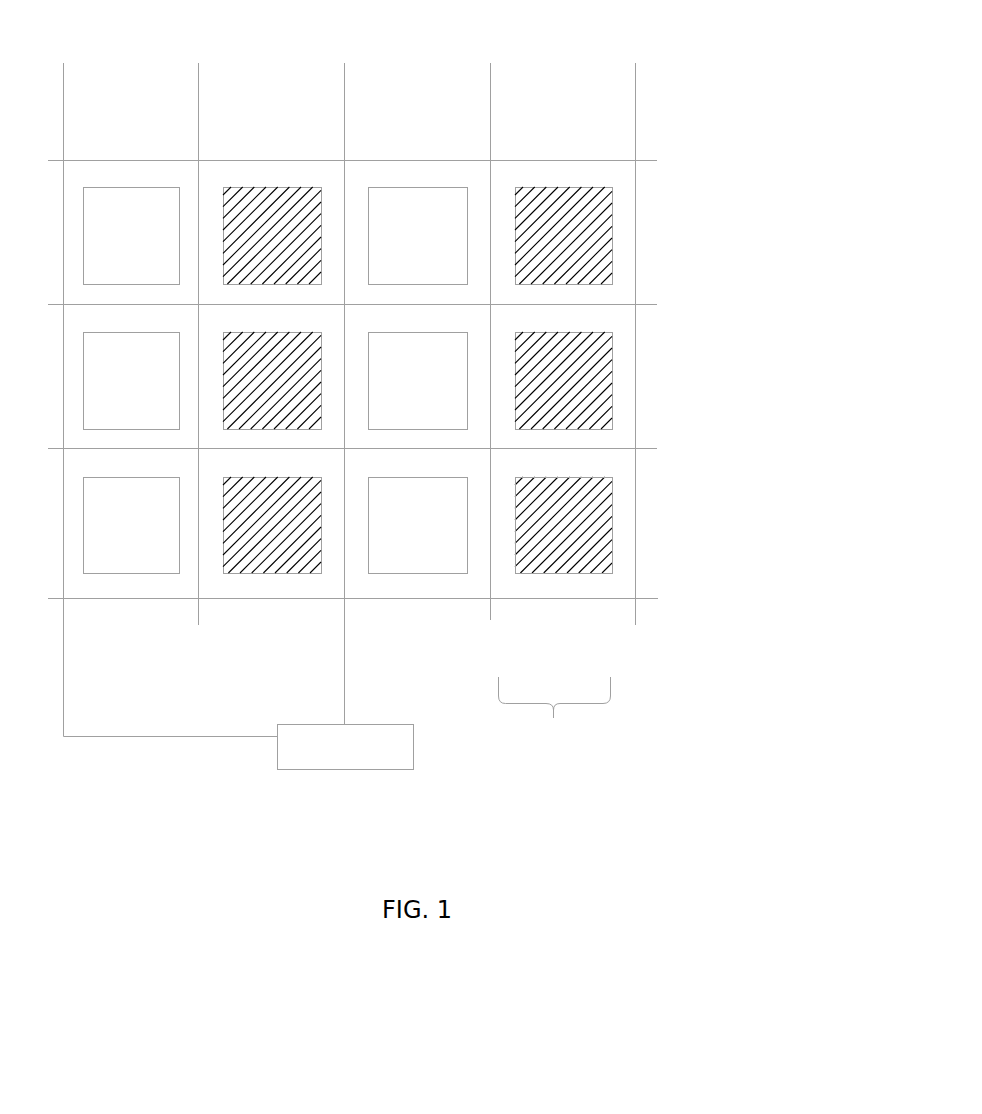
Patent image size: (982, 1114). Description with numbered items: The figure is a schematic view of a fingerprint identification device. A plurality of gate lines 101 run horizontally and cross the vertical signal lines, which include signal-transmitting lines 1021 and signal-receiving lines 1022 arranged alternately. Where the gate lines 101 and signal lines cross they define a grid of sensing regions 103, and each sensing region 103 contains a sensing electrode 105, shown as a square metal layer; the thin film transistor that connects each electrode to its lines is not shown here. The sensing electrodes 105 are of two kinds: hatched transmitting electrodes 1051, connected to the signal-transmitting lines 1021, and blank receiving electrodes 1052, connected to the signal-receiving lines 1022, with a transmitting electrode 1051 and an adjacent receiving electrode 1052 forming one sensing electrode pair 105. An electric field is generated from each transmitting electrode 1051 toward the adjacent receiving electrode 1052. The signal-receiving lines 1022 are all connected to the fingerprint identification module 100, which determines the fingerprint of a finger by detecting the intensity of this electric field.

The fingerprint identification module 100 is at (346, 747).
The gate lines 101 is at (728, 357).
The signal-transmitting lines 1021 is at (548, 47).
The signal-receiving lines 1022 is at (408, 43).
The sensing regions 103 is at (625, 492).
The sensing electrode 105 is at (555, 723).
The transmitting electrode 1051 is at (568, 553).
The receiving electrode 1052 is at (422, 550).